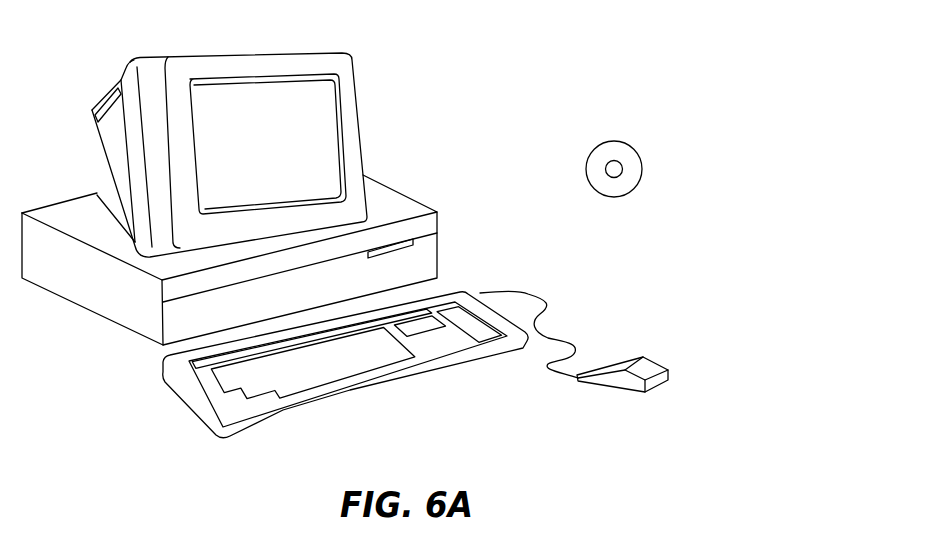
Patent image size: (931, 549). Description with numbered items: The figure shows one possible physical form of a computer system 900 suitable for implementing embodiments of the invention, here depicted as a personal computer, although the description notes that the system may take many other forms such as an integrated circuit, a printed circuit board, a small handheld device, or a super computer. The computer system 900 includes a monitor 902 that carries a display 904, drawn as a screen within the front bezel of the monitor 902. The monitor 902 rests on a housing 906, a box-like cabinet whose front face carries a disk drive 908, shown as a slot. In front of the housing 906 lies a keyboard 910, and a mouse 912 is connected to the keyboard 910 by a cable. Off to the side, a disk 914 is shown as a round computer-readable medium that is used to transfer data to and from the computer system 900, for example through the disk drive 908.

The computer system 900 is at (540, 38).
The monitor 902 is at (363, 150).
The display 904 is at (327, 110).
The housing 906 is at (127, 335).
The disk drive 908 is at (413, 240).
The keyboard 910 is at (357, 400).
The mouse 912 is at (658, 360).
The disk 914 is at (630, 143).